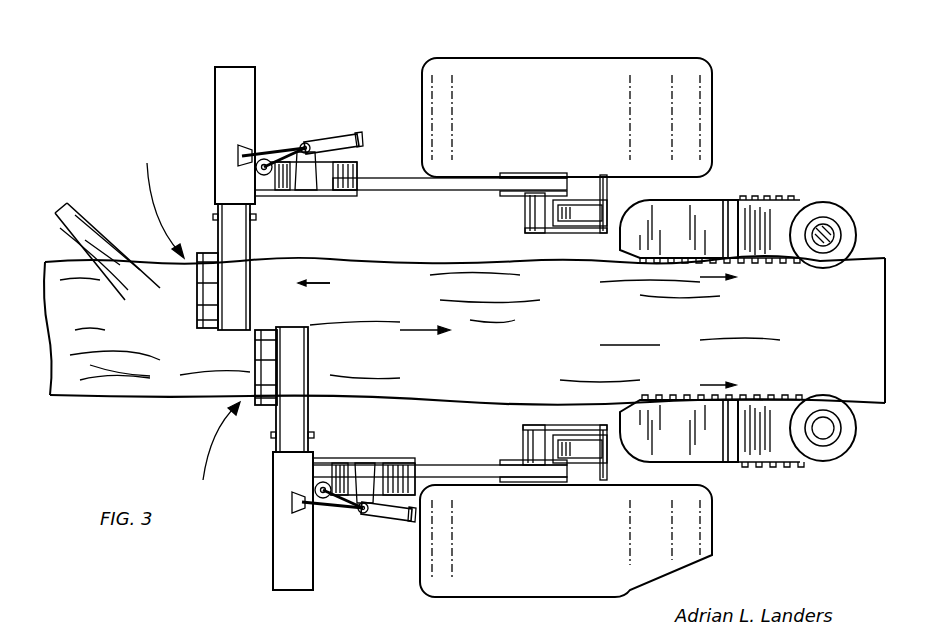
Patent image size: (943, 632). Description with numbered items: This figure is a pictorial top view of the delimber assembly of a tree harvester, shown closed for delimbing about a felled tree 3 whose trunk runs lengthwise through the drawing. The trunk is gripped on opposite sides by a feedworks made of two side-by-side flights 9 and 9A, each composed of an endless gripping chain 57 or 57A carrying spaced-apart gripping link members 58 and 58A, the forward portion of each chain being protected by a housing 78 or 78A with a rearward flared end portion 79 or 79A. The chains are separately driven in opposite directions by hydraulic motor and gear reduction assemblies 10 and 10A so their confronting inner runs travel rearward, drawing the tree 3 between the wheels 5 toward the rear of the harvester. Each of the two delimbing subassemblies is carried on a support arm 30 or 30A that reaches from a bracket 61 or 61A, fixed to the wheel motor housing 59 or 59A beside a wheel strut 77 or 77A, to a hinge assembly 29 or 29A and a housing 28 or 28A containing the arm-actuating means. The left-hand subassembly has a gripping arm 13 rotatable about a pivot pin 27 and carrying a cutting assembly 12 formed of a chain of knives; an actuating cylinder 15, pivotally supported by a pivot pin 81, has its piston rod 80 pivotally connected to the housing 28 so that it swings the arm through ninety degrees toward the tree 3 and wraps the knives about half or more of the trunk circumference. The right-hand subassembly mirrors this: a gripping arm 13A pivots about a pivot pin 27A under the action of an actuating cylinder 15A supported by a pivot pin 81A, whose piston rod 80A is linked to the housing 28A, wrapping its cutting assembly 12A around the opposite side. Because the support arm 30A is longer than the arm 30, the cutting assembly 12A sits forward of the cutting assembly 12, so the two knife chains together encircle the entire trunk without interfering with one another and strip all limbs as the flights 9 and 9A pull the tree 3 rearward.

The tree 3 is at (185, 398).
The wheels 5 is at (712, 96).
The flight 9 is at (778, 478).
The flight 9A is at (770, 195).
The hydraulic motor and gear reduction assembly 10 is at (848, 445).
The hydraulic motor and gear reduction assembly 10A is at (848, 214).
The cutting assembly 12 is at (255, 358).
The cutting assembly 12A is at (196, 308).
The gripping arm 13 is at (309, 347).
The gripping arm 13A is at (252, 303).
The actuating cylinder 15 is at (398, 520).
The actuating cylinder 15A is at (340, 138).
The pivot pin 27 is at (324, 482).
The pivot pin 27A is at (268, 178).
The housing 28 is at (273, 547).
The housing 28A is at (215, 101).
The hinge assembly 29 is at (376, 463).
The hinge assembly 29A is at (333, 196).
The support arm 30 is at (450, 466).
The support arm 30A is at (448, 192).
The endless gripping chain 57 is at (779, 400).
The endless gripping chain 57A is at (790, 204).
The gripping link members 58 is at (795, 466).
The gripping link members 58A is at (782, 266).
The motor housing 59 is at (522, 440).
The mounting bracket 59A is at (524, 215).
The bracket 61 is at (526, 482).
The slide plate 61A is at (532, 174).
The wheel strut 77 is at (583, 435).
The guide box 77A is at (582, 228).
The housing 78 is at (668, 455).
The chain housing 78A is at (666, 215).
The rearward flared end portion 79 is at (728, 466).
The housing end band 79A is at (733, 210).
The piston rod 80 is at (332, 510).
The piston rod 80A is at (279, 148).
The pivot pin 81 is at (363, 514).
The pivot pin 81A is at (308, 143).